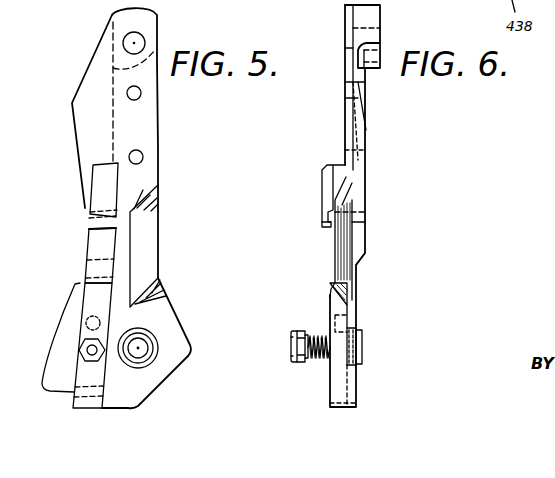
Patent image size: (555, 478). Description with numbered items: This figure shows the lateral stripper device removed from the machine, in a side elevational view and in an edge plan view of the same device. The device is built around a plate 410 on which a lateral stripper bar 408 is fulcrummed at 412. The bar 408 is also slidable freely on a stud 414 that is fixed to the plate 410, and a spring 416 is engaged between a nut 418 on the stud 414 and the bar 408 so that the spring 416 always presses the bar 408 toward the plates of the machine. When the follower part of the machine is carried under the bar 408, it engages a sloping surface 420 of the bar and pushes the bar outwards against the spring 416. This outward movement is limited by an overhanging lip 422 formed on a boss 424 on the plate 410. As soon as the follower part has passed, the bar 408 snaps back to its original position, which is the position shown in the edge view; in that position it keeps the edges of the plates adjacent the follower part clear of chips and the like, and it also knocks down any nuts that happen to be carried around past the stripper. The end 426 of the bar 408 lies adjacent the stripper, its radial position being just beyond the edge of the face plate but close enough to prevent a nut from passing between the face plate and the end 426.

In FIG. 5, the lateral stripper bar 408 is at (92, 307).
In FIG. 6, the lateral stripper bar 408 is at (338, 305).
In FIG. 5, the plate 410 is at (143, 138).
In FIG. 6, the plate 410 is at (357, 130).
In FIG. 6, the fulcrum 412 is at (347, 406).
In FIG. 5, the stud 414 is at (88, 350).
In FIG. 6, the stud 414 is at (290, 348).
In FIG. 6, the spring 416 is at (315, 360).
In FIG. 5, the nut 418 is at (95, 362).
In FIG. 6, the nut 418 is at (298, 363).
In FIG. 6, the sloping surface 420 is at (357, 268).
In FIG. 5, the overhanging lip 422 is at (97, 221).
In FIG. 6, the overhanging lip 422 is at (328, 227).
In FIG. 5, the boss 424 is at (100, 190).
In FIG. 6, the boss 424 is at (328, 182).
In FIG. 5, the end 426 is at (93, 242).
In FIG. 6, the end 426 is at (360, 240).